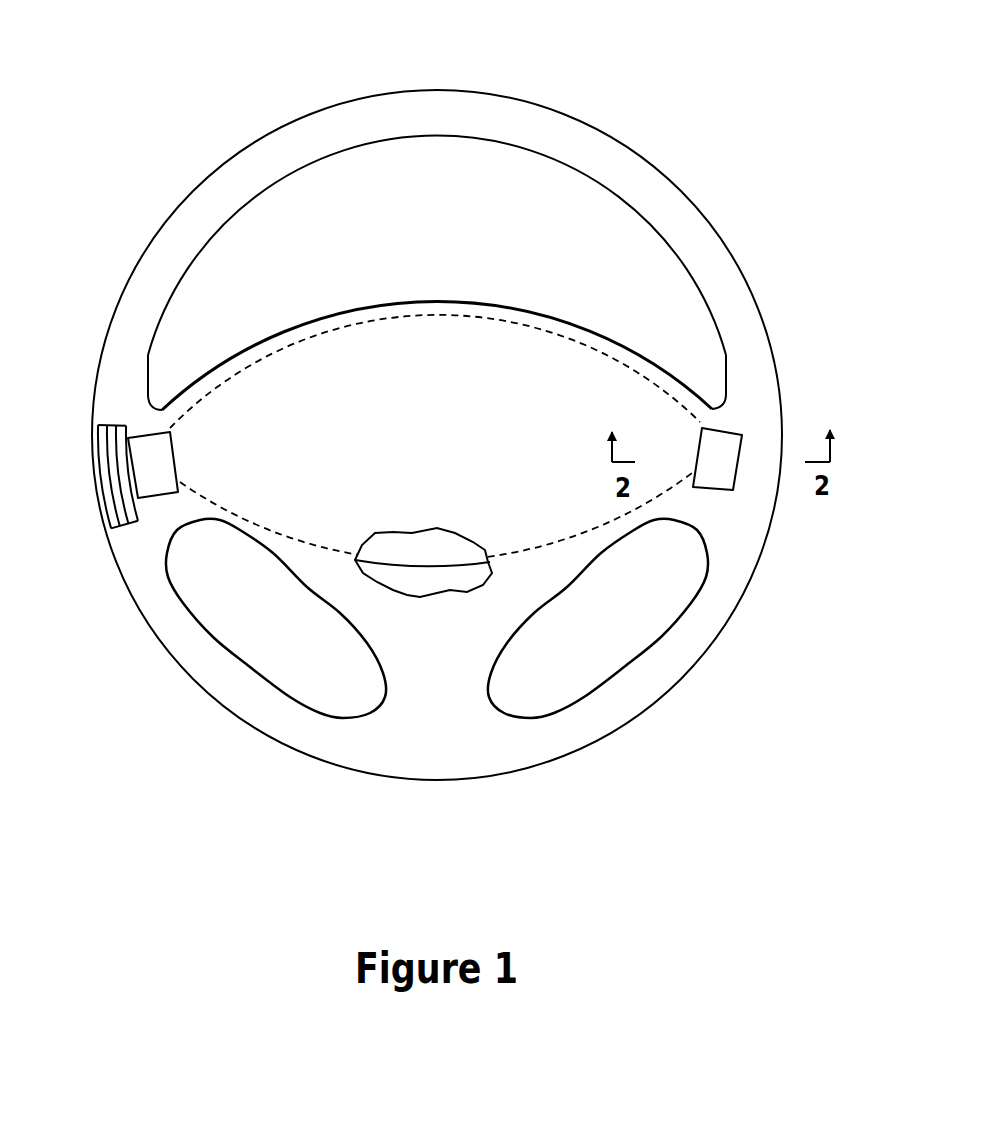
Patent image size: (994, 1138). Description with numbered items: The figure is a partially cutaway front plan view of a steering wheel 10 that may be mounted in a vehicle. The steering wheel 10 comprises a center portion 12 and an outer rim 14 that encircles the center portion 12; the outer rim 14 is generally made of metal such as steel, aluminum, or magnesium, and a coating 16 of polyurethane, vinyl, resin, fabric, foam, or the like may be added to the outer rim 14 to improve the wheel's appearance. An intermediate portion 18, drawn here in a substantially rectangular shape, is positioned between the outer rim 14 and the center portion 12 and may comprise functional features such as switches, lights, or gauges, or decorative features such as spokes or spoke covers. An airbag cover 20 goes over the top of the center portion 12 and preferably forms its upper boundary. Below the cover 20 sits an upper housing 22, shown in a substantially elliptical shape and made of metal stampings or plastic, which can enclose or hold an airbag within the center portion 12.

The steering wheel 10 is at (623, 125).
The center portion 12 is at (713, 415).
The outer rim 14 is at (92, 527).
The coating 16 is at (128, 318).
The intermediate portion 18 is at (152, 455).
The airbag cover 20 is at (570, 400).
The upper housing 22 is at (432, 567).